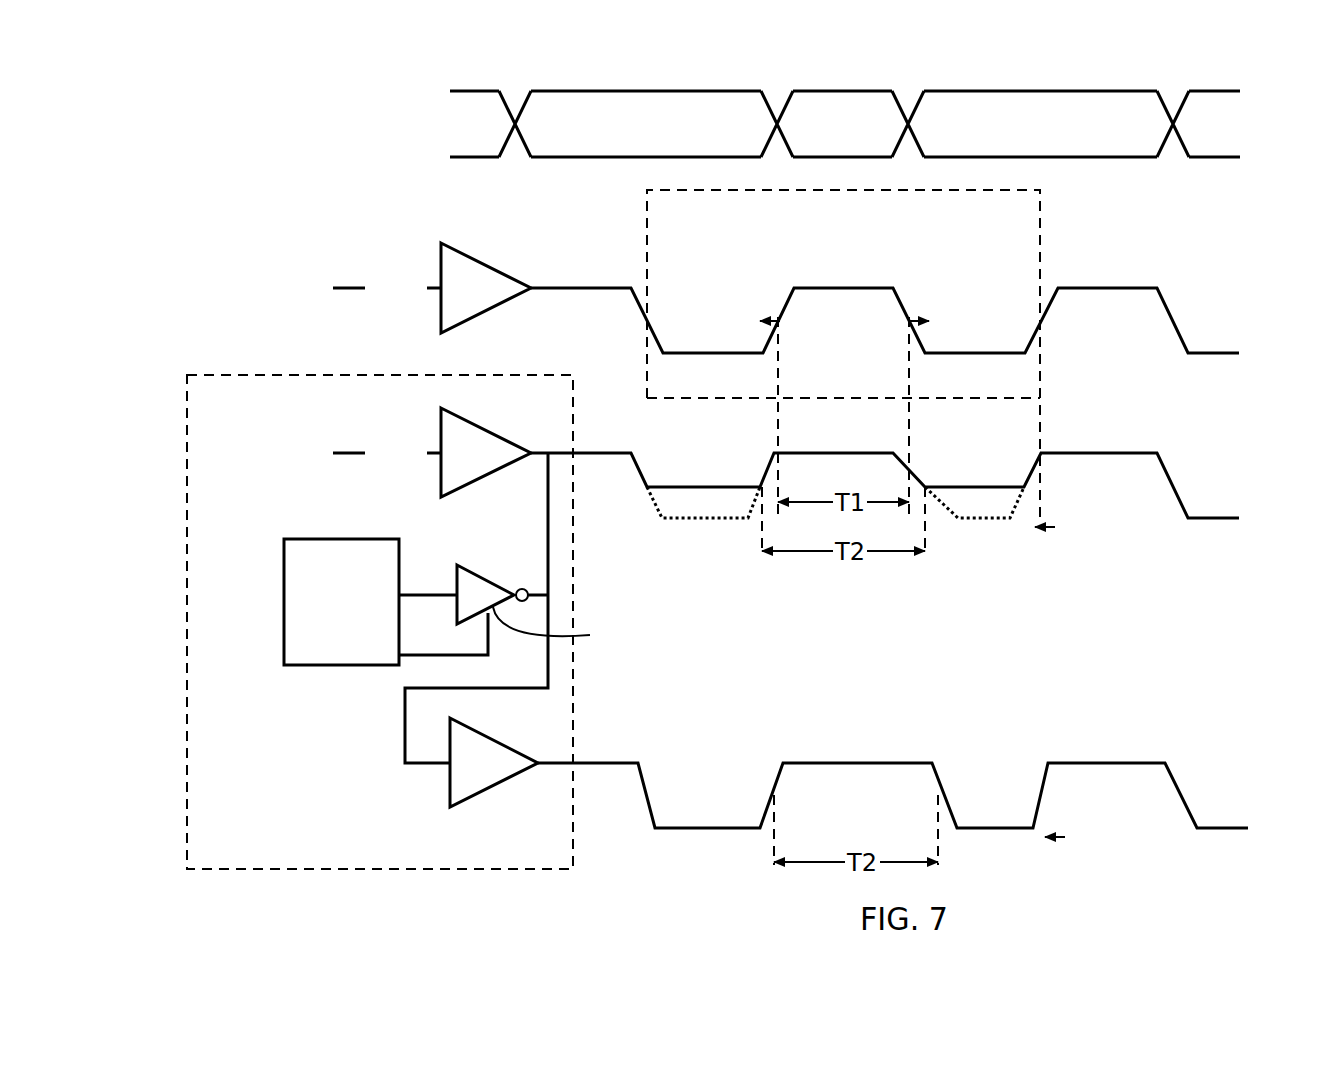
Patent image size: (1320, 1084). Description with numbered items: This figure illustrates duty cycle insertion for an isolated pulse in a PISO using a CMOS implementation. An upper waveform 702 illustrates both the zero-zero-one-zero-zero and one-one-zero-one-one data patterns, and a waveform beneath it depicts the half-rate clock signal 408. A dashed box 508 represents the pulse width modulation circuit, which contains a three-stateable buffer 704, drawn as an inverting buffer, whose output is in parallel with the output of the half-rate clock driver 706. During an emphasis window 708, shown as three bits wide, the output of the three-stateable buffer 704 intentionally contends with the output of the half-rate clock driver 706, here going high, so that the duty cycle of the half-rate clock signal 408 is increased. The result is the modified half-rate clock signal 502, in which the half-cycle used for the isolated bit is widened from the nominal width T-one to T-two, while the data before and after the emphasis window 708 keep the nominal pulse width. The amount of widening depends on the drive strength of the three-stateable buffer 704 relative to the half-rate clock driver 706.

The upper waveform 702 is at (407, 142).
The half-rate clock signal 408 is at (400, 307).
The half-rate clock driver 706 is at (462, 415).
The 3-stateable buffer 704 is at (627, 598).
The emphasis window 708 is at (1040, 260).
The pulse width modulation circuit 508 is at (566, 848).
The modified half-rate clock signal 502 is at (772, 780).